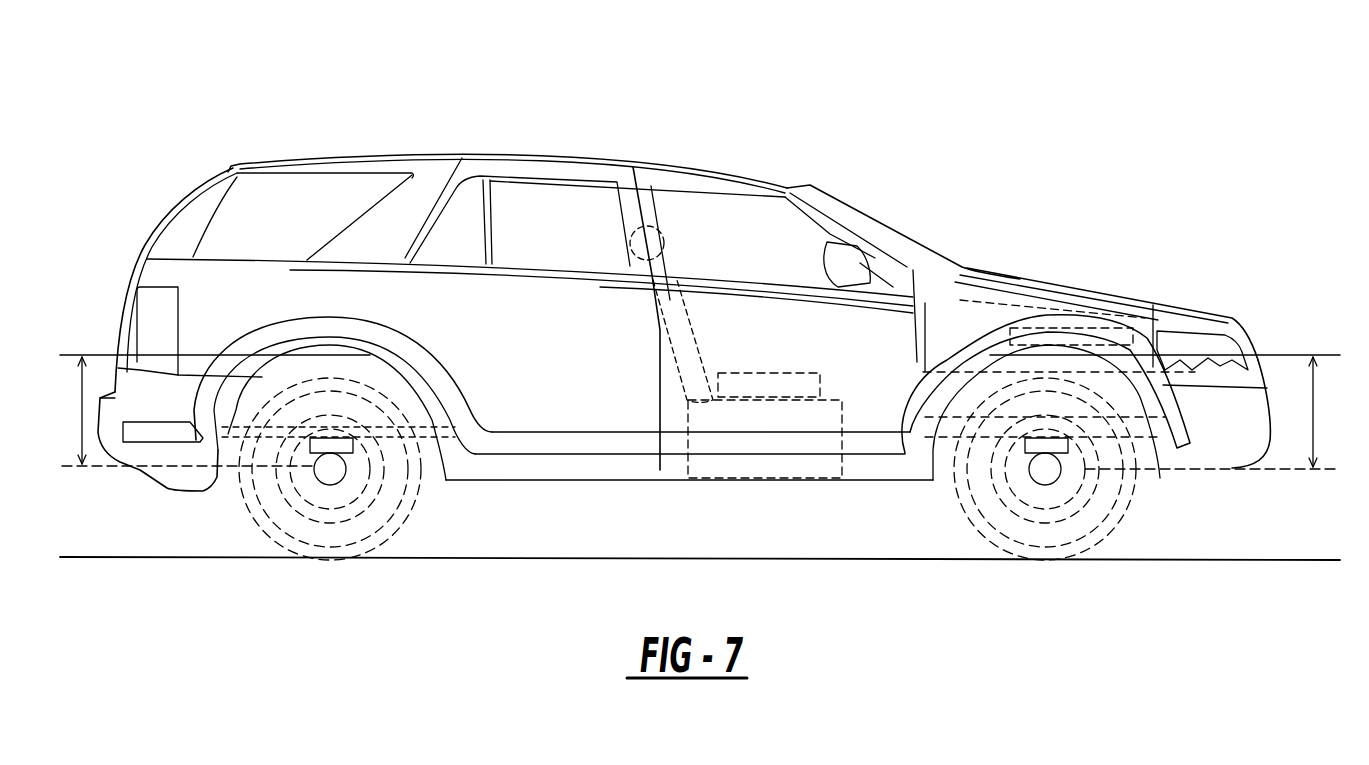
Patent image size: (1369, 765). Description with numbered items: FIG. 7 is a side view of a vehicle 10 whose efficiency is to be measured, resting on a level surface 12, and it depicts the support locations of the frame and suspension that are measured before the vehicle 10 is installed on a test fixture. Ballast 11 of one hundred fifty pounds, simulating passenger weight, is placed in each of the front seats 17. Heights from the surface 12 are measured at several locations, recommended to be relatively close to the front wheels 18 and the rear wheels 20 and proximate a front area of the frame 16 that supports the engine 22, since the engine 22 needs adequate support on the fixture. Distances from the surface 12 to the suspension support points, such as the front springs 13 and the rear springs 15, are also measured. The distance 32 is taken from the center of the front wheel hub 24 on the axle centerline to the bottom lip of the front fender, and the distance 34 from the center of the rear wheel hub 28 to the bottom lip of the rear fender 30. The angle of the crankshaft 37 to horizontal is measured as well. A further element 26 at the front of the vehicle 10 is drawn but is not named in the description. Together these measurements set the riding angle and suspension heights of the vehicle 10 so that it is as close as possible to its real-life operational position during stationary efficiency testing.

The vehicle 10 is at (347, 157).
The ballast 11 is at (740, 372).
The level surface 12 is at (186, 554).
The front springs 13 is at (985, 388).
The rear springs 15 is at (405, 385).
The frame 16 is at (160, 465).
The front seats 17 is at (674, 264).
The front wheels 18 is at (1122, 527).
The rear wheels 20 is at (262, 532).
The engine 22 is at (1062, 290).
The front wheel hub 24 is at (1050, 482).
The front bumper 26 is at (1250, 343).
The rear wheel hub 28 is at (345, 482).
The rear fender 30 is at (113, 343).
The distance 32 is at (1316, 420).
The distance 34 is at (82, 426).
The crankshaft 37 is at (1178, 302).